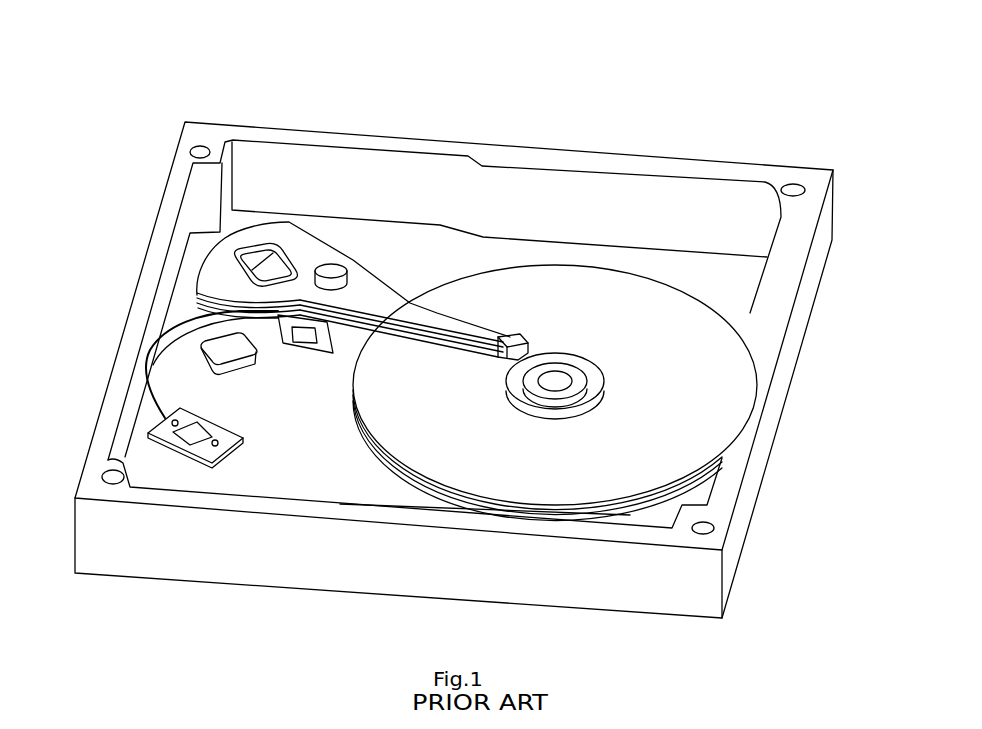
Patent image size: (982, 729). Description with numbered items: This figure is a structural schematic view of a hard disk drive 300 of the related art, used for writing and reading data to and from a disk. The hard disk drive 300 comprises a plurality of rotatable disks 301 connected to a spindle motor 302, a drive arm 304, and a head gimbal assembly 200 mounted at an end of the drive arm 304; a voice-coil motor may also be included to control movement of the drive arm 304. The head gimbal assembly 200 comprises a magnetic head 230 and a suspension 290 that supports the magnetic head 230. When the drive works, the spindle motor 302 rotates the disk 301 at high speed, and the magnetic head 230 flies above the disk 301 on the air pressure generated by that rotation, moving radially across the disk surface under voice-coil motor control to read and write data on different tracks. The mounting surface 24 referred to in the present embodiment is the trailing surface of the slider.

The hard disk drive 300 is at (148, 38).
The rotatable disk 301 is at (645, 310).
The spindle motor 302 is at (556, 379).
The drive arm 304 is at (352, 265).
The head gimbal assembly 200 is at (437, 313).
The magnetic head 230 is at (502, 337).
The mounting surface 24 is at (518, 356).
The suspension 290 is at (448, 333).